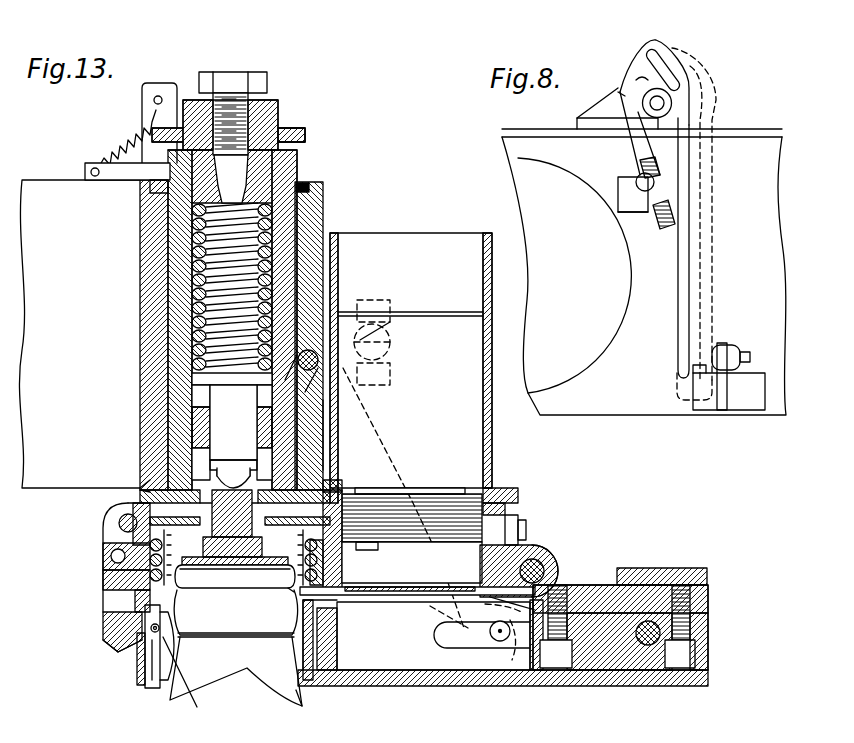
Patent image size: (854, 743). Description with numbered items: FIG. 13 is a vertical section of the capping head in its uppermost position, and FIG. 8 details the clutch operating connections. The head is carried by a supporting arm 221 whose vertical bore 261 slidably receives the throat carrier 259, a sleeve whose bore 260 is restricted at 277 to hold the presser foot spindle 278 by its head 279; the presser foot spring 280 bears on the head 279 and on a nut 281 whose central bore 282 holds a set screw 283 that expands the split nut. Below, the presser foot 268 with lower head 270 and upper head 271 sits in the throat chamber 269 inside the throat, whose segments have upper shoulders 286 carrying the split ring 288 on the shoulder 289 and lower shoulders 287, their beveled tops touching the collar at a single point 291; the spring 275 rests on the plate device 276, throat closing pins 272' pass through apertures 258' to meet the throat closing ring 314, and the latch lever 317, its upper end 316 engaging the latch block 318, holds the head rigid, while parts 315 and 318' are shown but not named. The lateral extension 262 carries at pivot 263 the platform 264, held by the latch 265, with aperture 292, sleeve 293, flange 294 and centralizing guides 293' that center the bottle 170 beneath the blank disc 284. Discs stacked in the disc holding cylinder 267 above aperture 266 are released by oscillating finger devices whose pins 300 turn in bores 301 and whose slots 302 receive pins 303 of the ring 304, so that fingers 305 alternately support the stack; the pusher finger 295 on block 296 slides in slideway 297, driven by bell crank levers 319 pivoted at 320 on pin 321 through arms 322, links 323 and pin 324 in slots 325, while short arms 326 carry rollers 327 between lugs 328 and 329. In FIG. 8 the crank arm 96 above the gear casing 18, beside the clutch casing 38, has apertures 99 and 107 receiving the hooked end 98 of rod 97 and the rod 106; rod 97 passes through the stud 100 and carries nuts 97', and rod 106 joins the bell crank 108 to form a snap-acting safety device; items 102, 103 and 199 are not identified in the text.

In FIG. 13, the supporting arm 221 is at (36, 190).
In FIG. 13, the pivoted latch lever 317 is at (142, 266).
In FIG. 13, the presser foot spring 280 is at (190, 322).
In FIG. 13, the throat carrier 259 is at (288, 178).
In FIG. 13, the vertical bore 261 is at (316, 208).
In FIG. 13, the set screw 283 is at (234, 76).
In FIG. 13, the central bore 282 is at (252, 106).
In FIG. 13, the nut 281 is at (284, 120).
In FIG. 13, the upper end of latch lever 316 is at (160, 86).
In FIG. 13, the latch block 318 is at (121, 137).
In FIG. 13, the arm 318' is at (127, 192).
In FIG. 13, the bore 260 is at (268, 236).
In FIG. 13, the spindle head 279 is at (246, 380).
In FIG. 13, the presser foot spindle 278 is at (232, 432).
In FIG. 13, the throat closing pins 272' is at (233, 460).
In FIG. 13, the apertures 258' is at (242, 482).
In FIG. 13, the pivot 320 is at (318, 350).
In FIG. 13, the upper lug 329 is at (388, 306).
In FIG. 13, the horizontally disposed arms 326 is at (392, 330).
In FIG. 13, the rollers 327 is at (390, 348).
In FIG. 13, the lower lug 328 is at (390, 374).
In FIG. 13, the pin 321 is at (322, 368).
In FIG. 13, the bell crank levers 319 is at (398, 466).
In FIG. 13, the restricted portion 277 is at (333, 428).
In FIG. 13, the upper head 271 is at (340, 466).
In FIG. 13, the split resilient ring 288 is at (348, 494).
In FIG. 13, the disc holding cylinder 267 is at (493, 440).
In FIG. 13, the ring 304 is at (520, 492).
In FIG. 13, the upper finger 305 is at (462, 496).
In FIG. 13, the pin 300 is at (478, 555).
In FIG. 13, the vertical bore 301 is at (478, 548).
In FIG. 13, the spring 275 is at (362, 546).
In FIG. 13, the plate device 276 is at (330, 572).
In FIG. 13, the pins 303 is at (520, 520).
In FIG. 13, the slots 302 is at (545, 530).
In FIG. 13, the lateral extension 262 is at (515, 550).
In FIG. 13, the aperture 266 is at (550, 552).
In FIG. 13, the pivot 263 is at (548, 565).
In FIG. 13, the downwardly extending arms 322 is at (390, 592).
In FIG. 13, the slideway 297 is at (474, 674).
In FIG. 13, the platform 264 is at (690, 690).
In FIG. 13, the slots 325 is at (440, 648).
In FIG. 13, the links 323 is at (526, 652).
In FIG. 13, the pusher finger block 296 is at (592, 672).
In FIG. 13, the pin 324 is at (648, 648).
In FIG. 13, the pusher finger 295 is at (640, 580).
In FIG. 13, the lower head 270 is at (229, 568).
In FIG. 13, the lower shoulder 287 is at (232, 590).
In FIG. 13, the upper shoulder 286 is at (158, 496).
In FIG. 13, the shoulder 289 is at (112, 548).
In FIG. 13, the throat chamber 269 is at (125, 584).
In FIG. 13, the point of contact 291 is at (282, 558).
In FIG. 13, the flange 294 is at (106, 620).
In FIG. 13, the pivoted latch 265 is at (112, 650).
In FIG. 13, the aperture 292 is at (143, 655).
In FIG. 13, the sleeve 293 is at (160, 677).
In FIG. 13, the centralizing guides 293' is at (195, 682).
In FIG. 13, the blank disc 284 is at (260, 590).
In FIG. 13, the presser foot 268 is at (290, 592).
In FIG. 13, the bottle 170 is at (287, 682).
In FIG. 13, the gasket 315 is at (148, 478).
In FIG. 13, the throat closing ring 314 is at (148, 492).
In FIG. 8, the gear casing 18 is at (664, 402).
In FIG. 8, the clutch casing 38 is at (590, 345).
In FIG. 8, the boss 103 is at (607, 192).
In FIG. 8, the rod 97 is at (640, 107).
In FIG. 8, the aperture 99 is at (636, 78).
In FIG. 8, the aperture 107 is at (656, 50).
In FIG. 8, the upper end of rod 98 is at (632, 82).
In FIG. 8, the crank arm 96 is at (690, 72).
In FIG. 8, the second rod 106 is at (683, 258).
In FIG. 8, the stud 100 is at (662, 180).
In FIG. 8, the nuts 97' is at (693, 213).
In FIG. 8, the block 102 is at (638, 216).
In FIG. 8, the bell crank 108 is at (708, 402).
In FIG. 8, the knob 199 is at (742, 347).